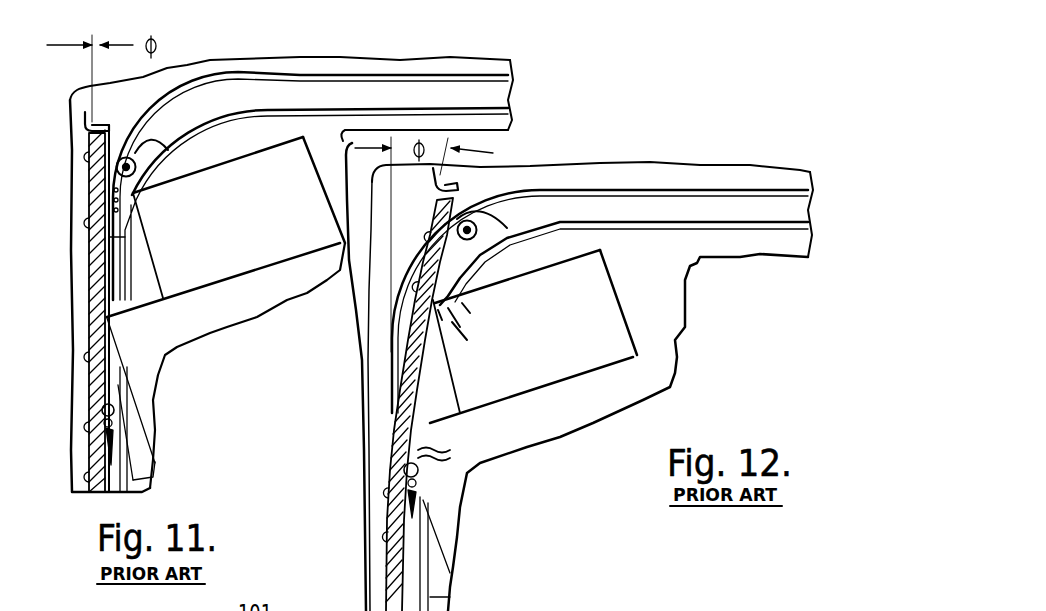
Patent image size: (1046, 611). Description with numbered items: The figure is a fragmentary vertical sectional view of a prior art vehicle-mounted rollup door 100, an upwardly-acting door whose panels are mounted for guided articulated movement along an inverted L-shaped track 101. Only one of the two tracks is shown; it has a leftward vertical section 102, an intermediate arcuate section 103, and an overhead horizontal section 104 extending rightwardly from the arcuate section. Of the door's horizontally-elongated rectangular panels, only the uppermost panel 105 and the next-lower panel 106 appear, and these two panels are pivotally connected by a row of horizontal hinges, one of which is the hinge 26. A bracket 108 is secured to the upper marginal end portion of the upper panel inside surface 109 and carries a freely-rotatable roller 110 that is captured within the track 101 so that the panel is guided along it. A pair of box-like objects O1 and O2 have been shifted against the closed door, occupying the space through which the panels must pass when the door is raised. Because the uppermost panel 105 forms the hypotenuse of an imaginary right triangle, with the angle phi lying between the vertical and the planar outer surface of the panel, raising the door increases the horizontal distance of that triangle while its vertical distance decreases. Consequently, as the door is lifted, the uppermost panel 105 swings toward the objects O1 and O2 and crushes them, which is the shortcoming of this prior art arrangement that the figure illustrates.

In FIG. 11, the hinge 26 is at (116, 395).
In FIG. 12, the hinge 26 is at (424, 472).
In FIG. 11, the vehicle-mounted rollup door 100 is at (84, 271).
In FIG. 12, the vehicle-mounted rollup door 100 is at (394, 356).
In FIG. 11, the track 101 is at (336, 72).
In FIG. 12, the track 101 is at (663, 188).
In FIG. 11, the vertical section 102 is at (133, 480).
In FIG. 12, the vertical section 102 is at (437, 594).
In FIG. 11, the arcuate section 103 is at (158, 92).
In FIG. 12, the arcuate section 103 is at (495, 198).
In FIG. 11, the horizontal section 104 is at (437, 72).
In FIG. 12, the horizontal section 104 is at (740, 190).
In FIG. 11, the uppermost panel 105 is at (117, 251).
In FIG. 12, the uppermost panel 105 is at (388, 390).
In FIG. 11, the next-lower panel 106 is at (87, 445).
In FIG. 12, the next-lower panel 106 is at (387, 580).
In FIG. 11, the bracket 108 is at (137, 216).
In FIG. 12, the bracket 108 is at (450, 297).
In FIG. 11, the upper panel inside surface 109 is at (112, 238).
In FIG. 12, the upper panel inside surface 109 is at (453, 287).
In FIG. 11, the roller 110 is at (170, 152).
In FIG. 12, the roller 110 is at (500, 242).
In FIG. 11, the box-like object O1 is at (268, 160).
In FIG. 12, the box-like object O1 is at (593, 284).
In FIG. 11, the box-like object O2 is at (293, 262).
In FIG. 12, the box-like object O2 is at (667, 362).